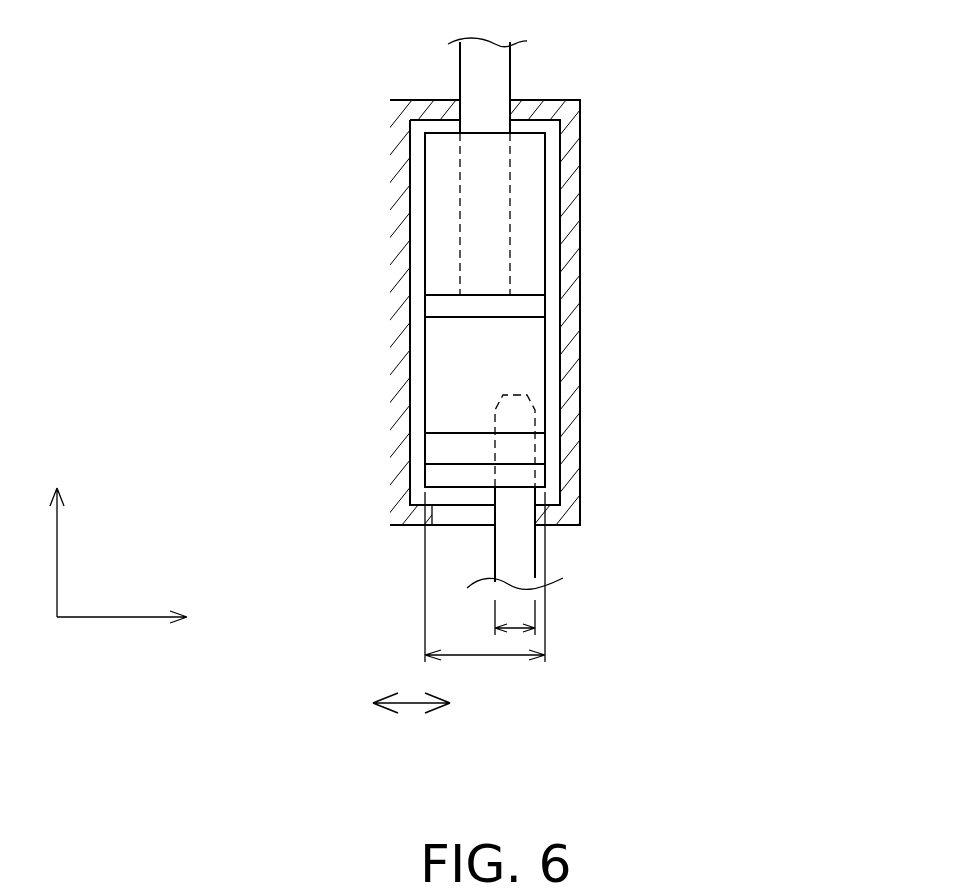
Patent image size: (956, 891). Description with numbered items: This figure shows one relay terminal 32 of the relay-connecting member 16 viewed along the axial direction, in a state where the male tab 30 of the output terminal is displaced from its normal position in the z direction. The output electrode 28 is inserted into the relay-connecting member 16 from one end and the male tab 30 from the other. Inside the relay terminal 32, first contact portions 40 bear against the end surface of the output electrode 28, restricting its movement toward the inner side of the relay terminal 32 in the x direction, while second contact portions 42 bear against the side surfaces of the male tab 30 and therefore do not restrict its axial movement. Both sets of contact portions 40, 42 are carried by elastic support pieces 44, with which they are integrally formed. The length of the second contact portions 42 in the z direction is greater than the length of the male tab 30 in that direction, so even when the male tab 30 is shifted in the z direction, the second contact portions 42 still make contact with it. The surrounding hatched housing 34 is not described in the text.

The relay-connecting member 16 is at (484, 369).
The output electrode 28 is at (510, 77).
The male tab 30 is at (537, 550).
The relay terminal 32 is at (513, 338).
The housing 34 is at (390, 222).
The first contact portions 40 is at (478, 296).
The second contact portions 42 is at (510, 452).
The elastic support pieces 44 is at (447, 389).